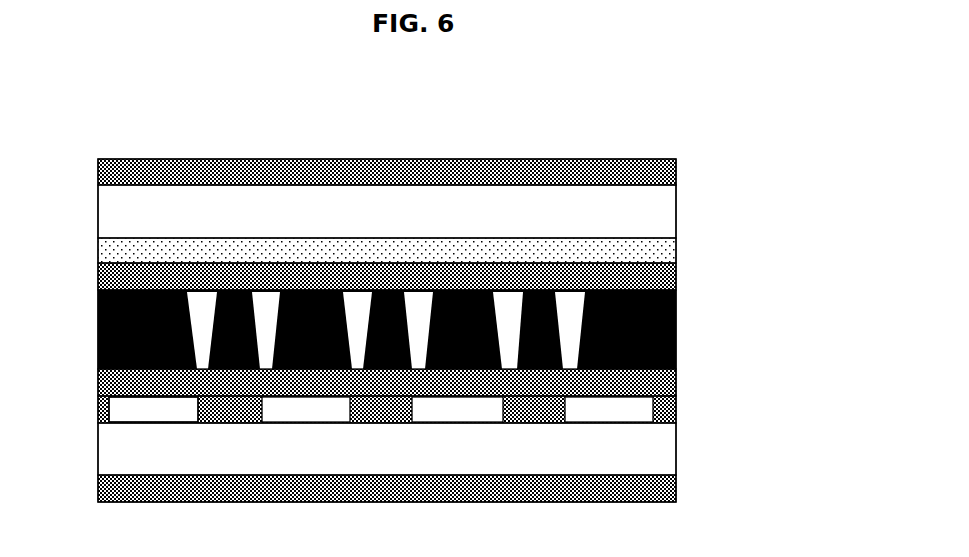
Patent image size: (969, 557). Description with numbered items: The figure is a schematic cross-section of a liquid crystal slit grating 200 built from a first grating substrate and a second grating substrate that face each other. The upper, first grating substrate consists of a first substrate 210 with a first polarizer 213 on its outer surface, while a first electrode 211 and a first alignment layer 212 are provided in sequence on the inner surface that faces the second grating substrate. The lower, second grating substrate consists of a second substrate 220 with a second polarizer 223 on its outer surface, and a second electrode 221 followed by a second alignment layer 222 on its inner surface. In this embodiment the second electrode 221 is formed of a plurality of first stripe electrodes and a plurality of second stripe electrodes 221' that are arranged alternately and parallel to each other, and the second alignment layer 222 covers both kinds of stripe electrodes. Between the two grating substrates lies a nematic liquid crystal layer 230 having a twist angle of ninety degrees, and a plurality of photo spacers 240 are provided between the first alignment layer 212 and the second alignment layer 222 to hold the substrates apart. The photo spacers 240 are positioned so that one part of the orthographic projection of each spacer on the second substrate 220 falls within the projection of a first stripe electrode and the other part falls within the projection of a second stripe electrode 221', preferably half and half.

The liquid crystal slit grating 200 is at (250, 147).
The first substrate 210 is at (655, 215).
The first electrode 211 is at (660, 245).
The first alignment layer 212 is at (660, 272).
The first polarizer 213 is at (658, 170).
The second substrate 220 is at (658, 443).
The second electrode 221 is at (400, 435).
The second stripe electrodes 221' is at (114, 435).
The second alignment layer 222 is at (662, 386).
The second polarizer 223 is at (663, 482).
The nematic liquid crystal layer 230 is at (442, 244).
The photo spacers 240 is at (410, 303).